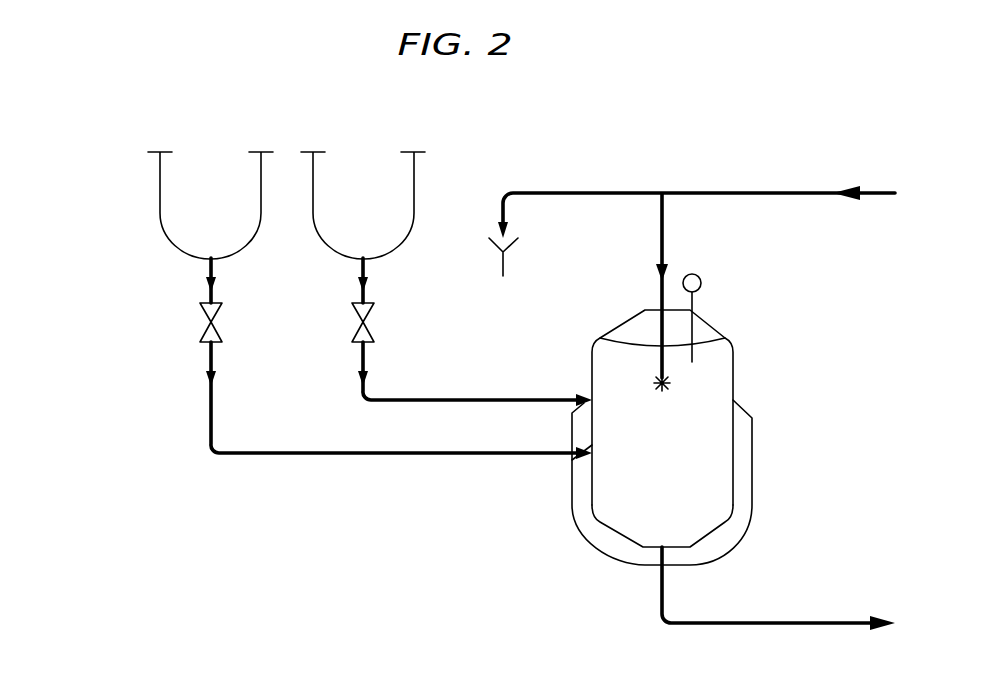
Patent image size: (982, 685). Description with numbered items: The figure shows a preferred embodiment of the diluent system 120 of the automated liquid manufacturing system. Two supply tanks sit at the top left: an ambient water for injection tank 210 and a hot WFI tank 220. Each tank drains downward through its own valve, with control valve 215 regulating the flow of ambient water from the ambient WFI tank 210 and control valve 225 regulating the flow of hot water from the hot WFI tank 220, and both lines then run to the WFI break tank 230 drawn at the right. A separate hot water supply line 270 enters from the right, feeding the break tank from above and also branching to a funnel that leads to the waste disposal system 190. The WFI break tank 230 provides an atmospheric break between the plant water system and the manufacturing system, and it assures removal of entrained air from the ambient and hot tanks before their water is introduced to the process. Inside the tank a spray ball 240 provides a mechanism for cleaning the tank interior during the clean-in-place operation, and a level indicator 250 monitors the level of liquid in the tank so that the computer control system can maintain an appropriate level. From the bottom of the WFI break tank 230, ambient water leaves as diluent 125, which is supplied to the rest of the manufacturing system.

The diluent system 120 is at (352, 565).
The diluent 125 is at (815, 621).
The waste disposal system 190 is at (498, 270).
The ambient water for injection tank 210 is at (160, 170).
The control valve 215 is at (201, 333).
The hot WFI tank 220 is at (414, 198).
The control valve 225 is at (355, 333).
The WFI break tank 230 is at (592, 383).
The spray ball 240 is at (664, 393).
The level indicator 250 is at (701, 281).
The hot water supply 270 is at (797, 192).